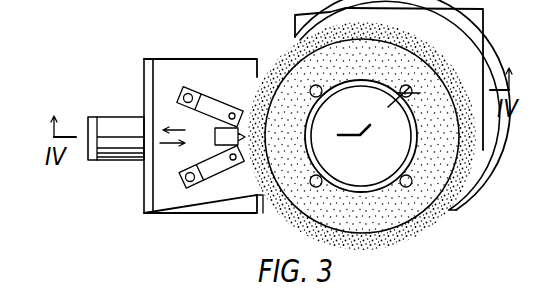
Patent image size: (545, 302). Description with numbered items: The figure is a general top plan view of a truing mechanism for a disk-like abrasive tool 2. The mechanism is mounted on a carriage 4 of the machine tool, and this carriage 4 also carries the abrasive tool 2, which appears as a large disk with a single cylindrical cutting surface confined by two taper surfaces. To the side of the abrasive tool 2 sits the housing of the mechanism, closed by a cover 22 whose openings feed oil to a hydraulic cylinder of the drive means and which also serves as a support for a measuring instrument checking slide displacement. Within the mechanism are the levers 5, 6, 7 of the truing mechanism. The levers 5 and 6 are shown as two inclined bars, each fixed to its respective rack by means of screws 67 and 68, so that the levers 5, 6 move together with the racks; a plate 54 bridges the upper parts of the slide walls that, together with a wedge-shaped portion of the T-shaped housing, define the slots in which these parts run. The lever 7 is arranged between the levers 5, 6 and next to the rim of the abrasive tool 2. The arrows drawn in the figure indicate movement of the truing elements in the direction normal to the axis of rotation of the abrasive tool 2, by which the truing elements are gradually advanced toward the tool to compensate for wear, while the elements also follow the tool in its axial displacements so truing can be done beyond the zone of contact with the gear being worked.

The disk-like abrasive tool 2 is at (290, 223).
The carriage 4 is at (474, 46).
The lever 5 is at (220, 100).
The lever 6 is at (227, 169).
The lever 7 is at (216, 132).
The cover 22 is at (146, 68).
The plate 54 is at (182, 72).
The screw 67 is at (191, 93).
The screw 68 is at (192, 181).